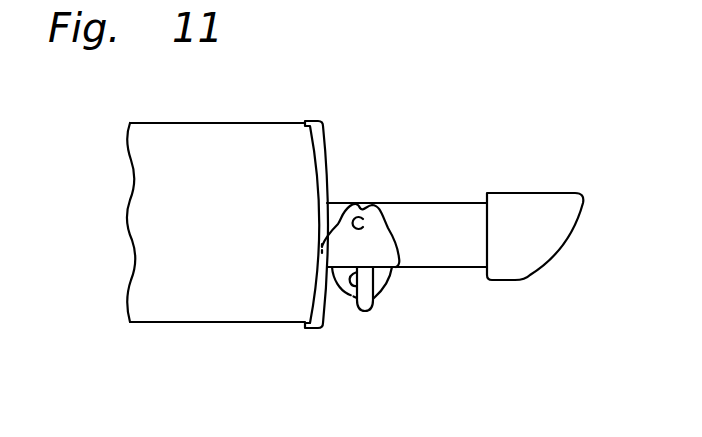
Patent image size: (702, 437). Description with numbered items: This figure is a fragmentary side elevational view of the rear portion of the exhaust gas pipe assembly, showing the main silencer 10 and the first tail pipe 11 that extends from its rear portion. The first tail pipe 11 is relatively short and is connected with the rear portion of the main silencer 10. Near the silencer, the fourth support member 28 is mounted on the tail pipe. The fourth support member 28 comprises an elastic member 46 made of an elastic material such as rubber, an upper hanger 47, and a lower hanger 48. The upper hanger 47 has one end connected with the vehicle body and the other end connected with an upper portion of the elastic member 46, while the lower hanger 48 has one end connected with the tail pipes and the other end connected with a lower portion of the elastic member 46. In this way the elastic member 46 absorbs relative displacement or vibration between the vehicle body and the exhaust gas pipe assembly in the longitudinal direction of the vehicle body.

The main silencer 10 is at (316, 141).
The first tail pipe 11 is at (466, 268).
The fourth support member 28 is at (391, 292).
The elastic member 46 is at (394, 217).
The upper hanger 47 is at (366, 205).
The lower hanger 48 is at (360, 311).